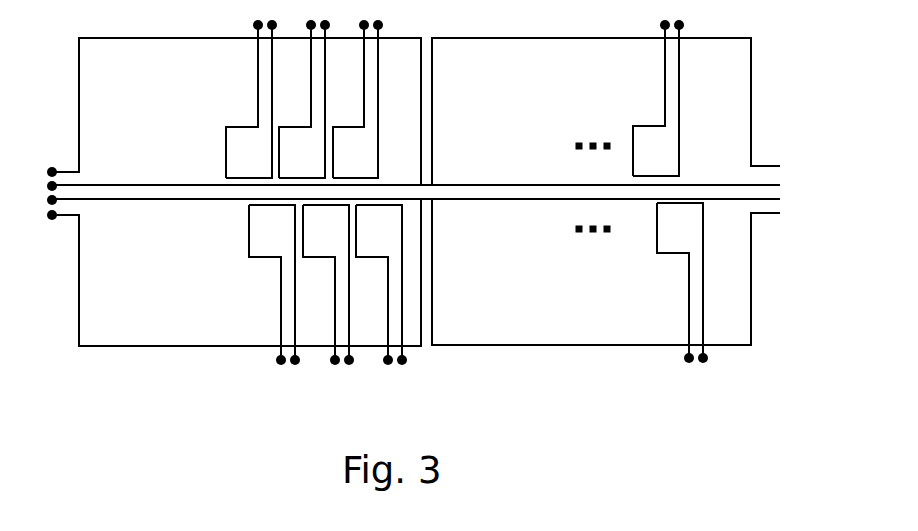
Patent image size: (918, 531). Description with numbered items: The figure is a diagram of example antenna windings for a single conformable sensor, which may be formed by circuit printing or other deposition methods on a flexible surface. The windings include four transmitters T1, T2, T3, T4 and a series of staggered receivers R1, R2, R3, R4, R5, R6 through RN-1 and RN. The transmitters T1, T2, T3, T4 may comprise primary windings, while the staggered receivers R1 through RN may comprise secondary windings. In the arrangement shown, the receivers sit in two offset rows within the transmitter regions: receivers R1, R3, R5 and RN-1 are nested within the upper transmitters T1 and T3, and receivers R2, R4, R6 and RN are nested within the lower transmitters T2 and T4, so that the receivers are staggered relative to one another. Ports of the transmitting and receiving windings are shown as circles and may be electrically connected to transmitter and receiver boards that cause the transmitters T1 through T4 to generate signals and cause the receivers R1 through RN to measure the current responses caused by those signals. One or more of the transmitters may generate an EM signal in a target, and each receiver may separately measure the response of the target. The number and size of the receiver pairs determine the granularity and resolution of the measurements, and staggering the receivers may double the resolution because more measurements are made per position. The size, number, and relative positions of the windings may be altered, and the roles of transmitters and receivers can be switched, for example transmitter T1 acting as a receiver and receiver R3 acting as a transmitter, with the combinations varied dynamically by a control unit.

The transmitter T1 is at (236, 111).
The transmitter T2 is at (236, 272).
The transmitter T3 is at (606, 111).
The transmitter T4 is at (606, 272).
The staggered receiver R1 is at (251, 99).
The staggered receiver R2 is at (274, 285).
The staggered receiver R3 is at (304, 99).
The staggered receiver R4 is at (328, 285).
The staggered receiver R5 is at (358, 99).
The staggered receiver R6 is at (381, 285).
The staggered receiver RN-1 is at (658, 98).
The staggered receiver RN is at (682, 283).